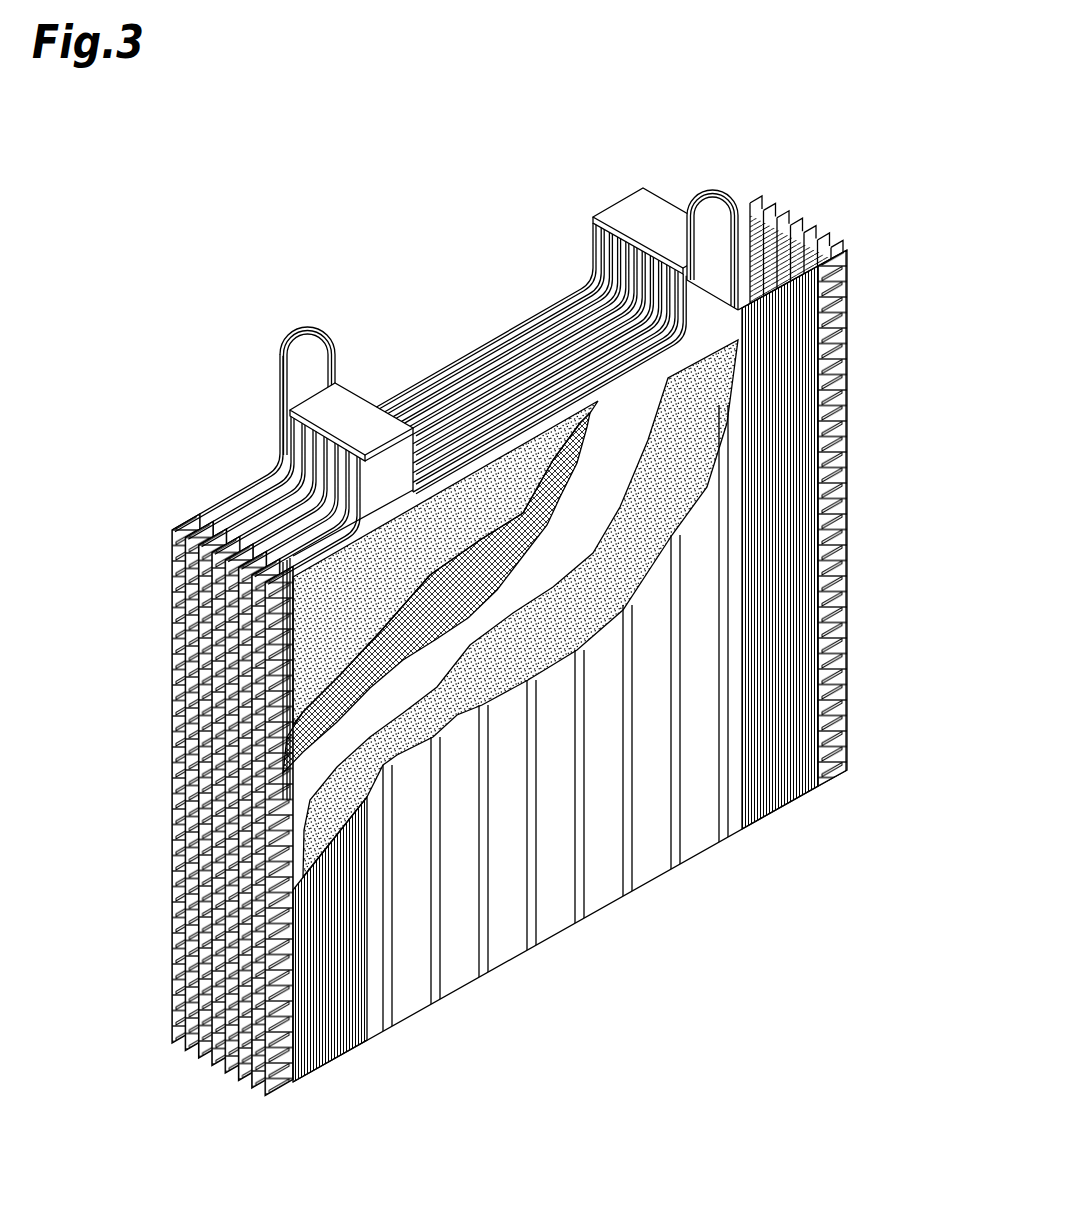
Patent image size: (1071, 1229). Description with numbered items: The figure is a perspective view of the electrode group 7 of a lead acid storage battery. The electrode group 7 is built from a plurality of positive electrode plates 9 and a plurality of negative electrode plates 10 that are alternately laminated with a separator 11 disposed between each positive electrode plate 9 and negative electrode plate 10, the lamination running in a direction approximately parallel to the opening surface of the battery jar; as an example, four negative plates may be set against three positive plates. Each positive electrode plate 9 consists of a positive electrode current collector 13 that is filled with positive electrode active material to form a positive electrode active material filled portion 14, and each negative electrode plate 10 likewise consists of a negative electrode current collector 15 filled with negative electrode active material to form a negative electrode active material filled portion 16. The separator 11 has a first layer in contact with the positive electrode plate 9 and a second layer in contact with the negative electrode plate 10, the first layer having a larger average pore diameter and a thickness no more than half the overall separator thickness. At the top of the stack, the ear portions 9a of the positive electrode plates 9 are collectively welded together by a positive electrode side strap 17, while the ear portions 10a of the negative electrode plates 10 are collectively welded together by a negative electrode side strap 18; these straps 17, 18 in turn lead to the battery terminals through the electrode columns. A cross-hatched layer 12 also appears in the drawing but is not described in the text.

The electrode group 7 is at (501, 602).
The positive electrode plate 9 is at (326, 748).
The ear portion 9a is at (278, 455).
The negative electrode plate 10 is at (625, 536).
The ear portion 10a is at (593, 263).
The separator 11 is at (582, 493).
The intermediate layer 12 is at (477, 540).
The positive electrode current collector 13 is at (250, 568).
The positive electrode active material filled portion 14 is at (320, 627).
The negative electrode current collector 15 is at (733, 327).
The negative electrode active material filled portion 16 is at (712, 370).
The positive electrode side strap 17 is at (350, 413).
The negative electrode side strap 18 is at (660, 219).